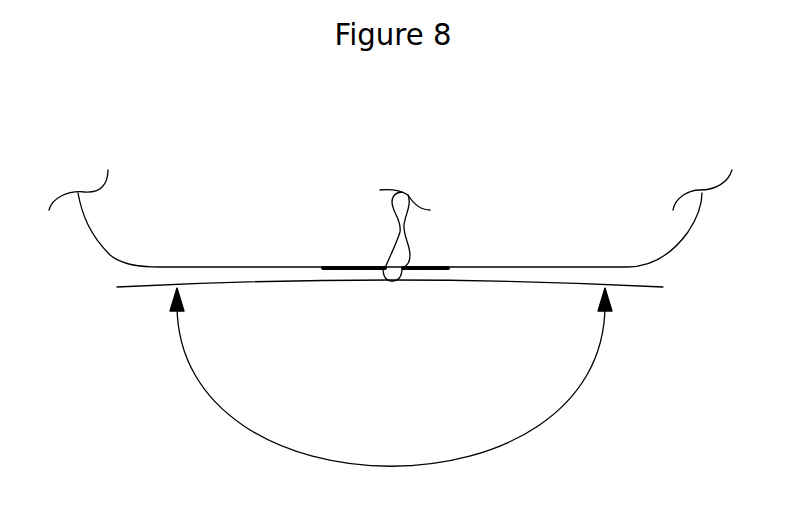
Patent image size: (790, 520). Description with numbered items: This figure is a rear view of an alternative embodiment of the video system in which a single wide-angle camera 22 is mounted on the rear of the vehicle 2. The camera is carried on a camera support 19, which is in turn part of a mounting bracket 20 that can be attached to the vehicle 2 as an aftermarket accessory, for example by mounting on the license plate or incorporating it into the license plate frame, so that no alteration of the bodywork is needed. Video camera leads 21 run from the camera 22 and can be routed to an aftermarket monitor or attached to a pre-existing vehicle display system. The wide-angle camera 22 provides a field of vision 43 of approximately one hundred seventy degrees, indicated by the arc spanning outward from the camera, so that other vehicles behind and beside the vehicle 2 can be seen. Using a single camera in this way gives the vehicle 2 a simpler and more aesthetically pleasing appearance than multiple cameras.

The vehicle 2 is at (123, 218).
The camera support 19 is at (383, 265).
The mounting bracket 20 is at (418, 266).
The video camera leads 21 is at (395, 215).
The single wide-angle camera 22 is at (389, 281).
The field of vision 43 is at (278, 438).